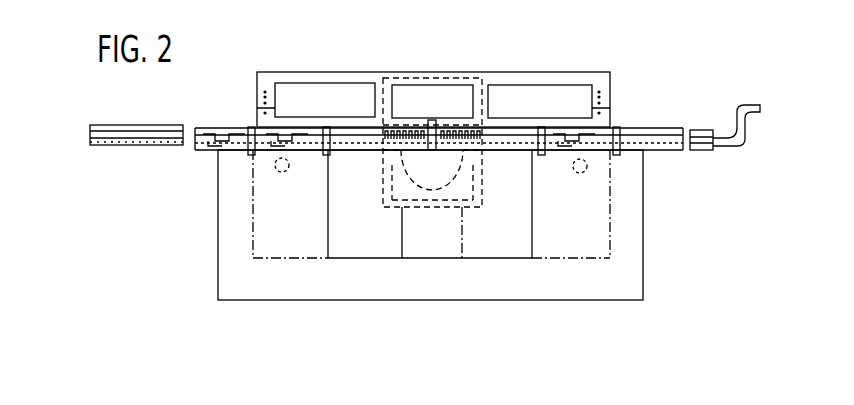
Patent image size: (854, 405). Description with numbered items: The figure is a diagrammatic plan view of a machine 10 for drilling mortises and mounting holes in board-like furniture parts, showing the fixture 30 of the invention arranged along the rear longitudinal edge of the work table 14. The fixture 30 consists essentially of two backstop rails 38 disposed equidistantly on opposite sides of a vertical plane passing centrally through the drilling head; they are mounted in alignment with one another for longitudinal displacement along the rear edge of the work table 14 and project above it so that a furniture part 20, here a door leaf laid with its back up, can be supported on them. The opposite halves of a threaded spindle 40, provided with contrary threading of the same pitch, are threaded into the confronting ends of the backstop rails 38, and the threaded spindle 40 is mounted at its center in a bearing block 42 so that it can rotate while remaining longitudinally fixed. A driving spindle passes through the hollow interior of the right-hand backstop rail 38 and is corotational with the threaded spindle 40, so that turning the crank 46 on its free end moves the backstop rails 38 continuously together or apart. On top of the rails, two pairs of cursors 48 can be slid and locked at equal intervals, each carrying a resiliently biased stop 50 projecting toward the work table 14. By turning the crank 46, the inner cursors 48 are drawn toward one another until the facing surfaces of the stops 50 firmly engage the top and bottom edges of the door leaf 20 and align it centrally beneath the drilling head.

The machine 10 is at (477, 244).
The work table 14 is at (583, 291).
The furniture part 20 is at (502, 245).
The fixture 30 is at (612, 125).
The backstop rails 38 is at (147, 135).
The threaded spindle 40 is at (468, 130).
The bearing block 42 is at (432, 120).
The crank 46 is at (742, 125).
The cursors 48 is at (247, 127).
The stop 50 is at (248, 152).